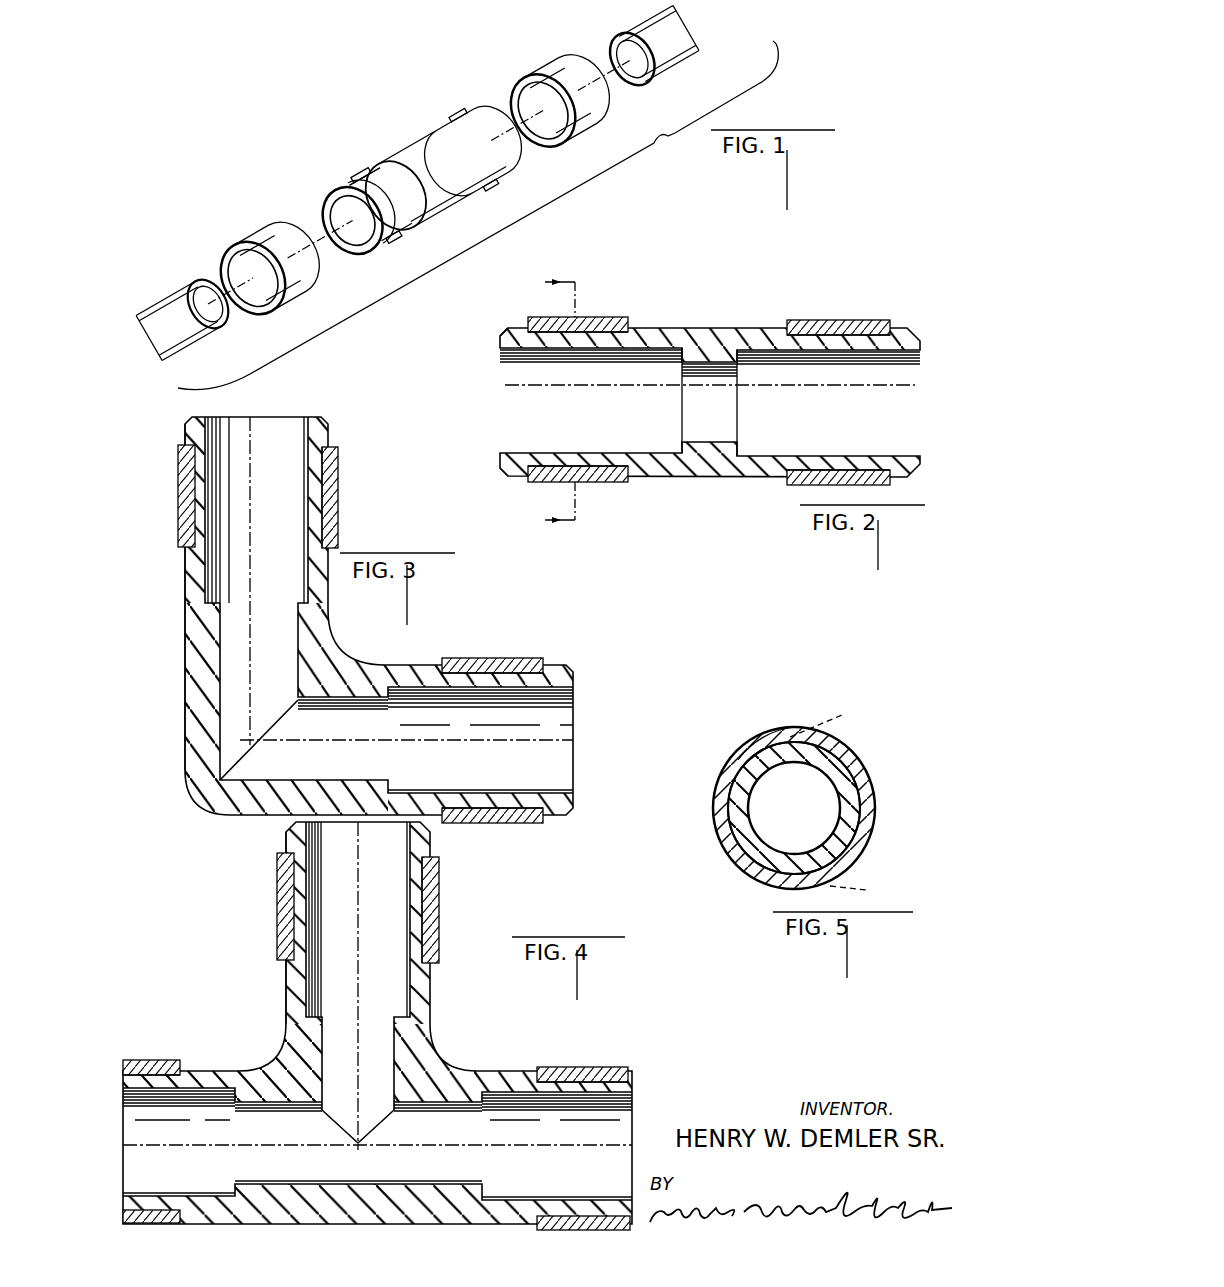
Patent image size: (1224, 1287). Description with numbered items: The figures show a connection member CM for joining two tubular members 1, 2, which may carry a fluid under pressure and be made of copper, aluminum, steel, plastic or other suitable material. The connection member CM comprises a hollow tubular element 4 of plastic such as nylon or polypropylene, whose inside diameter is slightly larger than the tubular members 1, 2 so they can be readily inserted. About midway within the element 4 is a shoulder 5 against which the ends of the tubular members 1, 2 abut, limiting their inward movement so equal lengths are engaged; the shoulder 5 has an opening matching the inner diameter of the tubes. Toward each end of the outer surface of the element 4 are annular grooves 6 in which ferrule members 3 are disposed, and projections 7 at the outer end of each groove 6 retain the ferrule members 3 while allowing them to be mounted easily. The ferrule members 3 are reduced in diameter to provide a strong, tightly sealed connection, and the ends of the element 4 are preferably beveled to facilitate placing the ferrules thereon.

In FIG. 1, the tubular member 1 is at (166, 292).
In FIG. 2, the tubular member 1 is at (591, 356).
In FIG. 1, the tubular member 2 is at (672, 14).
In FIG. 2, the tubular member 2 is at (828, 358).
In FIG. 1, the ferrule member 3 is at (259, 208).
In FIG. 2, the ferrule member 3 is at (610, 318).
In FIG. 3, the ferrule member 3 is at (336, 492).
In FIG. 4, the ferrule member 3 is at (278, 892).
In FIG. 5, the ferrule member 3 is at (715, 828).
In FIG. 1, the hollow tubular element 4 is at (424, 197).
In FIG. 2, the hollow tubular element 4 is at (710, 328).
In FIG. 3, the hollow tubular element 4 is at (379, 616).
In FIG. 4, the hollow tubular element 4 is at (377, 1023).
In FIG. 5, the hollow tubular element 4 is at (852, 788).
In FIG. 2, the shoulder 5 is at (745, 314).
In FIG. 1, the annular groove 6 is at (360, 160).
In FIG. 2, the annular groove 6 is at (612, 480).
In FIG. 3, the annular groove 6 is at (340, 456).
In FIG. 4, the annular groove 6 is at (440, 916).
In FIG. 5, the annular groove 6 is at (744, 758).
In FIG. 1, the projection 7 is at (338, 178).
In FIG. 2, the projection 7 is at (510, 326).
In FIG. 5, the projection 7 is at (837, 801).
In FIG. 1, the connection member CM is at (420, 122).
In FIG. 2, the connection member CM is at (717, 488).
In FIG. 3, the connection member CM is at (178, 721).
In FIG. 4, the connection member CM is at (268, 1017).